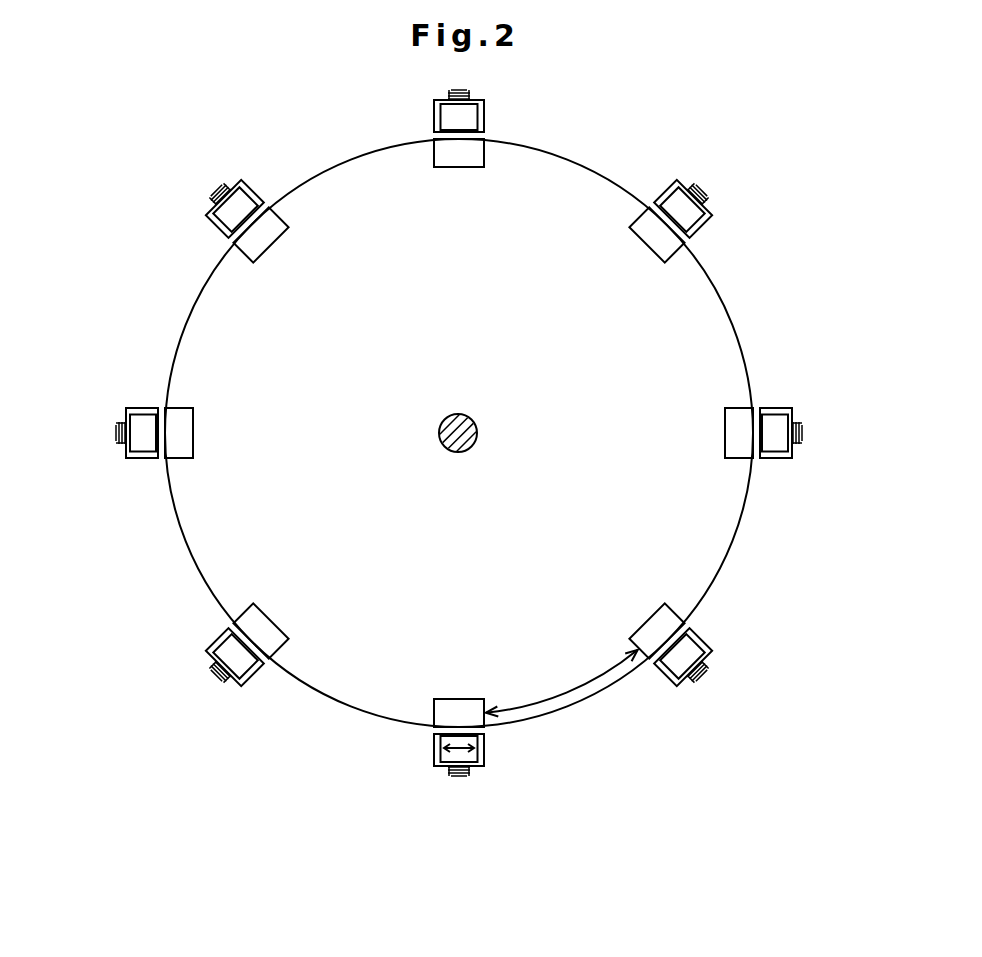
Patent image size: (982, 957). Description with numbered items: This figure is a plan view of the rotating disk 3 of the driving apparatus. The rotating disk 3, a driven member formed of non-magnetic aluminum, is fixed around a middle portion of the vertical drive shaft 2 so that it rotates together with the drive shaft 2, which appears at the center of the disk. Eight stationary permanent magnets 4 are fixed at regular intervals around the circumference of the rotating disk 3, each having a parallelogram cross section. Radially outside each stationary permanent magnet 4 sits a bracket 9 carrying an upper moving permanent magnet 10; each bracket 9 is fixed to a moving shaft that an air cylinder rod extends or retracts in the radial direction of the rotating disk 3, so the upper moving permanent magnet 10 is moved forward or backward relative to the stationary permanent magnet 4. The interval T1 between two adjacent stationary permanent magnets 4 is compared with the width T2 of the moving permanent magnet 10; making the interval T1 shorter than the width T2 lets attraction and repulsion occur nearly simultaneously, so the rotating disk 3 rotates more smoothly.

The drive shaft 2 is at (478, 428).
The rotating disk 3 is at (100, 430).
The stationary permanent magnet 4 is at (459, 168).
The bracket 9 is at (433, 114).
The upper moving permanent magnet 10 is at (476, 116).
The interval between stationary permanent magnets T1 is at (574, 690).
The width of moving permanent magnets T2 is at (456, 760).